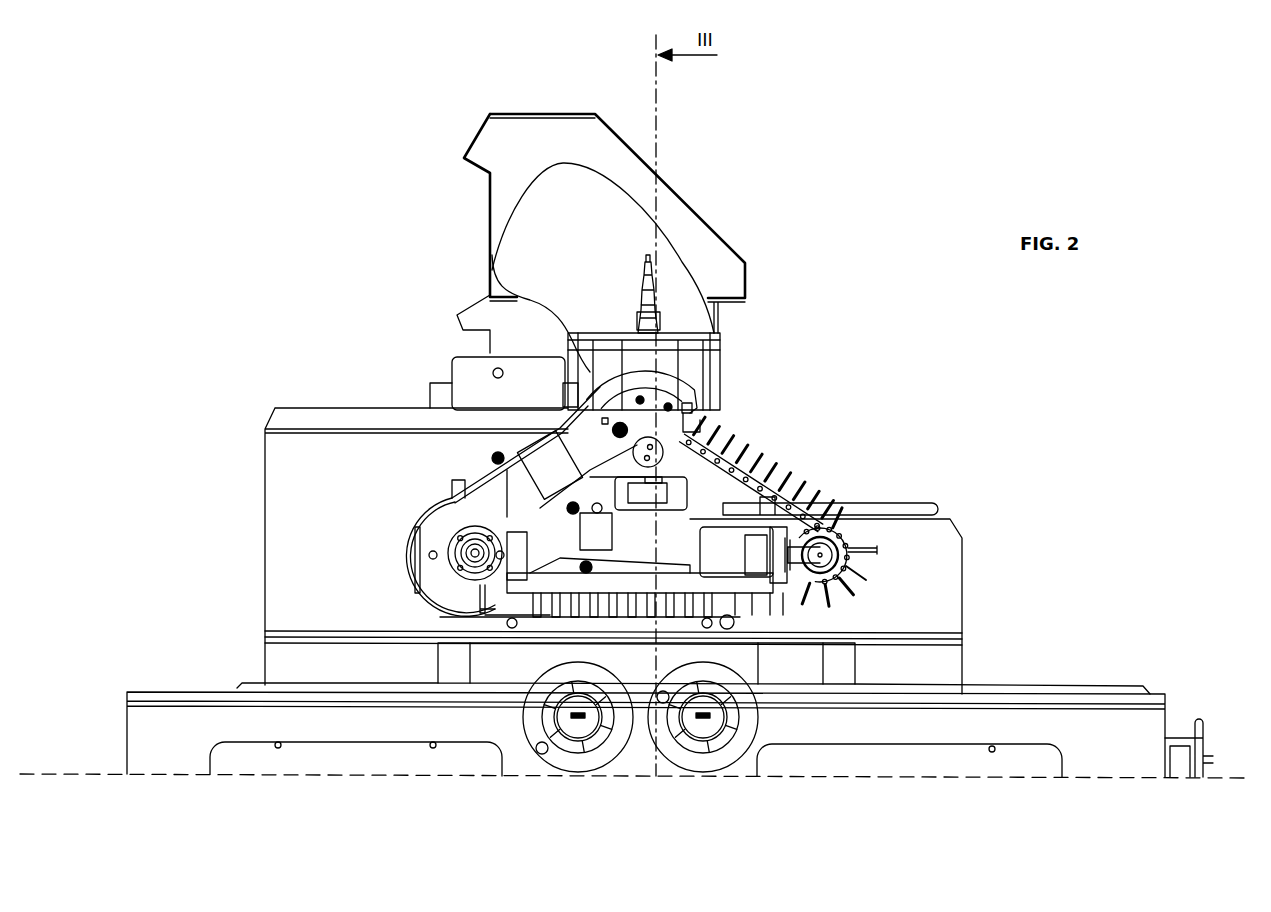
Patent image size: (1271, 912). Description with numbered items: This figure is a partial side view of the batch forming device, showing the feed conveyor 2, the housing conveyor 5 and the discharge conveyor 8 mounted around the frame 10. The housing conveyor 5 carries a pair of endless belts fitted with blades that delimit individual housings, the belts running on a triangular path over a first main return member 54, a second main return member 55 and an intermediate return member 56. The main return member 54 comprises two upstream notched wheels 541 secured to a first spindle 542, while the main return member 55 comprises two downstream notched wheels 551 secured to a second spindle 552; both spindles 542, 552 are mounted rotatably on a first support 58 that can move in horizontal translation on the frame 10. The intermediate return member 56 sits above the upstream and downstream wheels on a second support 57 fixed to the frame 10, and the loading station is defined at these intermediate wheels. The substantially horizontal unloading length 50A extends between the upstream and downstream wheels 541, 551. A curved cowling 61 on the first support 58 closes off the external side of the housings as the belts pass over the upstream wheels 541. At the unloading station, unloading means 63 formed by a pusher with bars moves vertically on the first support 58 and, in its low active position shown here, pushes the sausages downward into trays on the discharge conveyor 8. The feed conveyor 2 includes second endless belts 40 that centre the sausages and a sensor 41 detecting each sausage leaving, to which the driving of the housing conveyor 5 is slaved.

The feed conveyor 2 is at (674, 331).
The housing conveyor 5 is at (837, 491).
The discharge conveyor 8 is at (862, 671).
The frame 10 is at (263, 489).
The second endless belts 40 is at (590, 372).
The sensor 41 is at (656, 283).
The unloading length 50A is at (797, 578).
The main return member 54 is at (450, 554).
The upstream notched wheels 541 is at (445, 557).
The first spindle 542 is at (470, 548).
The main return member 55 is at (842, 537).
The downstream notched wheels 551 is at (848, 550).
The second spindle 552 is at (848, 570).
The intermediate return member 56 is at (675, 465).
The second support 57 is at (680, 482).
The first support 58 is at (740, 578).
The curved cowling 61 is at (418, 573).
The unloading means 63 is at (565, 565).